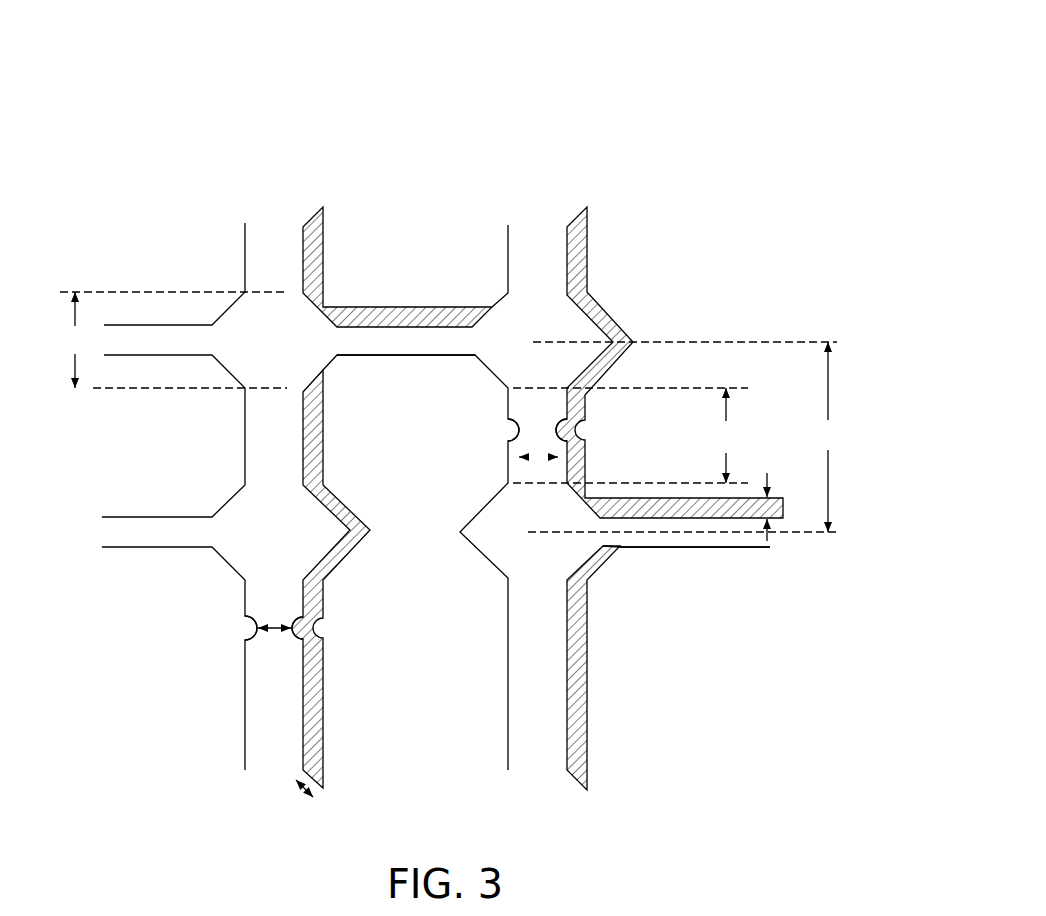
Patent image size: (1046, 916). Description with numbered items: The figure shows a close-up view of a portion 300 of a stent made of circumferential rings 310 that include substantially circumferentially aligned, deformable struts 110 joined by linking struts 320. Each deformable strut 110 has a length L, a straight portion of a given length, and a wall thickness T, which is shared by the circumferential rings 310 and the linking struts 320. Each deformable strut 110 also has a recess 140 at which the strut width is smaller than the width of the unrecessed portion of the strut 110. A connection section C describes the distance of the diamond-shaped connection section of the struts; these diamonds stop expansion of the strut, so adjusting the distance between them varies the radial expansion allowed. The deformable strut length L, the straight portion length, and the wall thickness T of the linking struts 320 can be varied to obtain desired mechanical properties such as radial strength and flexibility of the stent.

The portion of the stent 300 is at (607, 78).
The deformable strut 110 is at (257, 708).
The recess 140 is at (601, 432).
The circumferential ring 310 is at (245, 197).
The linking strut 320 is at (410, 347).